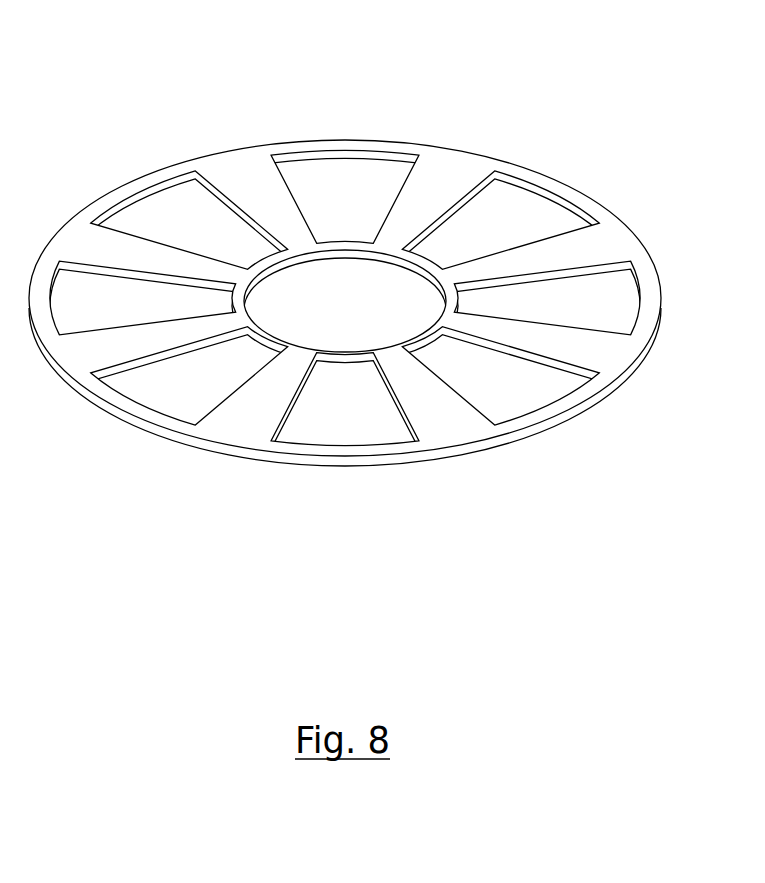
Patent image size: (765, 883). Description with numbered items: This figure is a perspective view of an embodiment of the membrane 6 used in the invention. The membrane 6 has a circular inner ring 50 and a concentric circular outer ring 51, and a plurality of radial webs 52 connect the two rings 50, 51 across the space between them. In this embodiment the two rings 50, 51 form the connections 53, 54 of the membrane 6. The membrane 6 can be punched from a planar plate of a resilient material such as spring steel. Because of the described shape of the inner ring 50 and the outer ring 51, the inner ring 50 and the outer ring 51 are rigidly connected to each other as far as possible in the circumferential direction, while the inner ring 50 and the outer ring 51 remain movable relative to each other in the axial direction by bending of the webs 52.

The membrane 6 is at (155, 453).
The circular inner ring 50 is at (345, 253).
The circular outer ring 51 is at (135, 193).
The radial web 52 is at (558, 257).
The connection 53 is at (299, 256).
The connection 54 is at (547, 425).